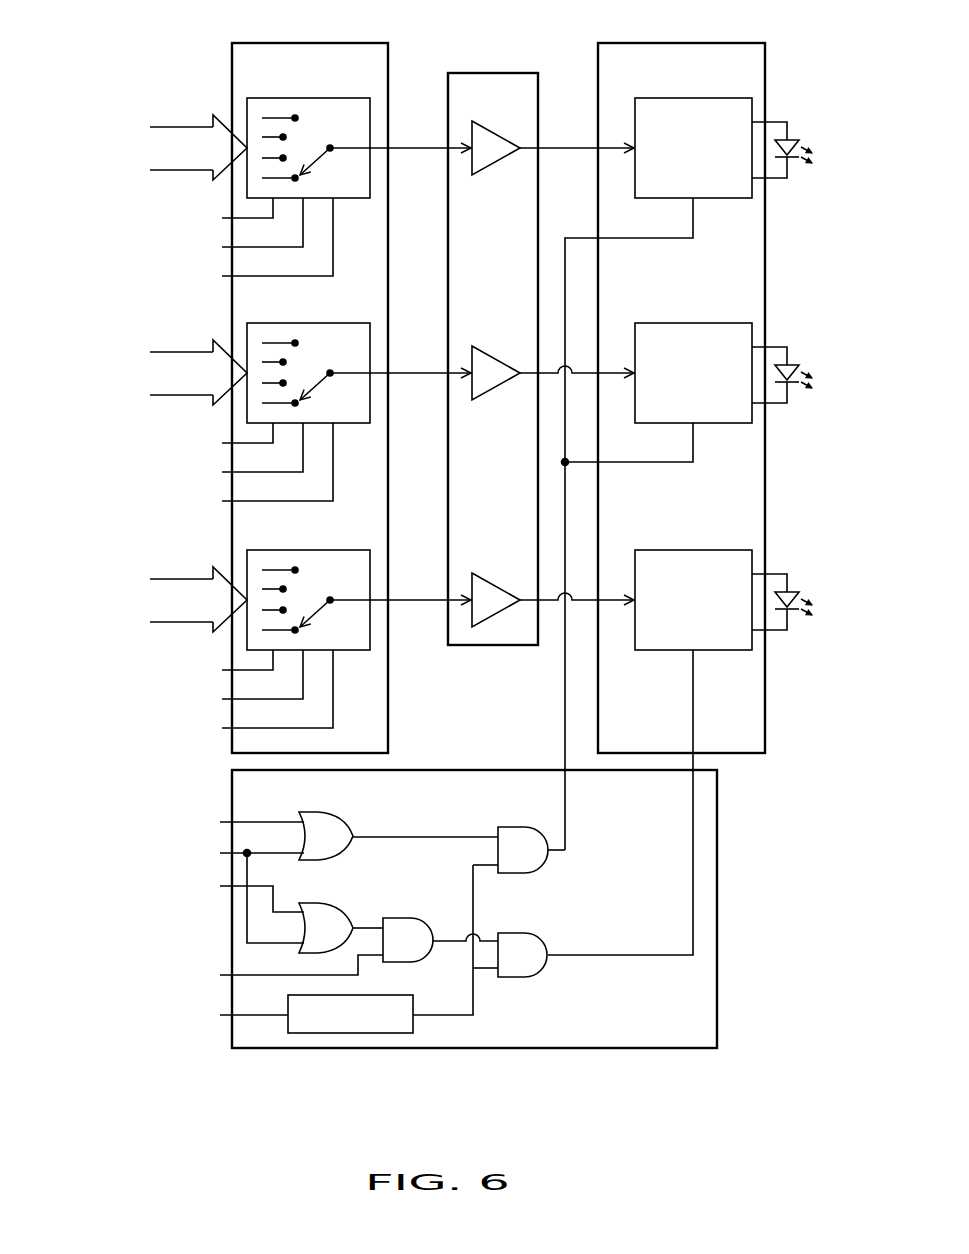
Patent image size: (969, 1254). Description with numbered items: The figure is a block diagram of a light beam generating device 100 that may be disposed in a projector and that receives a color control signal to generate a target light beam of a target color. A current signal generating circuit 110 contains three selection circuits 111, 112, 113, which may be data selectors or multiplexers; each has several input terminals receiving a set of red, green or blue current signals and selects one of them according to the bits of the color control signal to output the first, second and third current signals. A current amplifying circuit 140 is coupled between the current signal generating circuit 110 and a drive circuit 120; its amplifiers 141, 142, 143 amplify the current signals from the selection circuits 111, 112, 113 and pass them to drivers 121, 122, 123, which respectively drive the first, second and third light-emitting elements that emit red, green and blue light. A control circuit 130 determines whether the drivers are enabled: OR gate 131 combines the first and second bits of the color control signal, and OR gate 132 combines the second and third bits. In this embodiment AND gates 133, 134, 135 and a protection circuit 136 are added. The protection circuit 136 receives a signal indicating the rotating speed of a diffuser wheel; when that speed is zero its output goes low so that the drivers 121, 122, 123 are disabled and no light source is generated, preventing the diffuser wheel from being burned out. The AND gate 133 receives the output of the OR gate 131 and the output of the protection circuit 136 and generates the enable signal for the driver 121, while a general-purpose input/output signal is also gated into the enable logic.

The light beam generating device 100 is at (792, 1078).
The current signal generating circuit 110 is at (335, 42).
The selection circuit 111 is at (308, 98).
The selection circuit 112 is at (308, 323).
The selection circuit 113 is at (308, 550).
The drive circuit 120 is at (713, 43).
The driver 121 is at (689, 98).
The driver 122 is at (689, 323).
The driver 123 is at (689, 550).
The control circuit 130 is at (473, 770).
The OR gate 131 is at (350, 823).
The OR gate 132 is at (348, 915).
The AND gate 133 is at (547, 862).
The AND gate 134 is at (433, 922).
The AND gate 135 is at (547, 967).
The protection circuit 136 is at (398, 995).
The current amplifying circuit 140 is at (493, 73).
The amplifier 141 is at (500, 135).
The amplifier 142 is at (500, 360).
The amplifier 143 is at (500, 587).